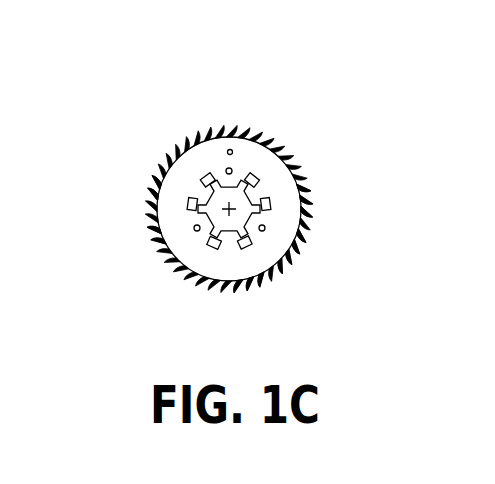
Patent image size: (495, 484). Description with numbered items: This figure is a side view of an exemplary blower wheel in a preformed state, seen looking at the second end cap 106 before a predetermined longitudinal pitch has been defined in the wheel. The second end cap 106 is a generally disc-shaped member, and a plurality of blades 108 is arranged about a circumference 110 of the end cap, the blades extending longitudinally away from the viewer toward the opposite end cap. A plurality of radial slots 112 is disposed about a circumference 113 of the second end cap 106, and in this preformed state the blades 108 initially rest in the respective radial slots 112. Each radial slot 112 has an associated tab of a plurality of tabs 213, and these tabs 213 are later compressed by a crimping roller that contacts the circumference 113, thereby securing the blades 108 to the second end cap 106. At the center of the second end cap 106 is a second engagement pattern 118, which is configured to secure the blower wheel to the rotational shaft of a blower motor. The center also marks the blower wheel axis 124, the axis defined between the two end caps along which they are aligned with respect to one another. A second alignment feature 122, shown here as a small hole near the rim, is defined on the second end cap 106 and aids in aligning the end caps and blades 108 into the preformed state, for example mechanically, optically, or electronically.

The second end cap 106 is at (272, 177).
The plurality of blades 108 is at (205, 132).
The circumference 110 is at (330, 249).
The plurality of radial slots 112 is at (334, 190).
The circumference 113 is at (128, 186).
The second engagement pattern 118 is at (190, 183).
The second alignment feature 122 is at (232, 149).
The blower wheel axis 124 is at (232, 207).
The plurality of tabs 213 is at (292, 252).